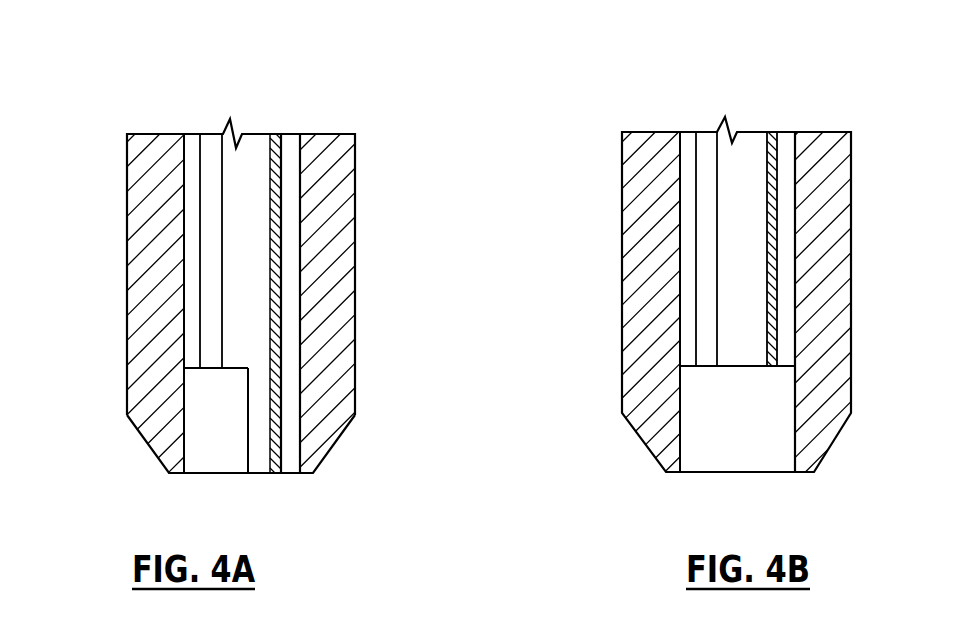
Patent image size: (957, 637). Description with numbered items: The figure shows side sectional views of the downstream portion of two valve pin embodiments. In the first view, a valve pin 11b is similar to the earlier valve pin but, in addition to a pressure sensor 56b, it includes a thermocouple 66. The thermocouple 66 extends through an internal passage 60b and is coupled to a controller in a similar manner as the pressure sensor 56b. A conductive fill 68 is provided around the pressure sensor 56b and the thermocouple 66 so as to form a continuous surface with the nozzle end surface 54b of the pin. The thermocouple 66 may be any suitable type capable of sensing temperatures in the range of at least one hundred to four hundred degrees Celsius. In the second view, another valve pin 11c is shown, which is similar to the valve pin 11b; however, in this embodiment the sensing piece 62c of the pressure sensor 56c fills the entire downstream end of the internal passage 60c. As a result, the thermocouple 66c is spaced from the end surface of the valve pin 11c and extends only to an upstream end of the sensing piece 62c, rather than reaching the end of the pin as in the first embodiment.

In FIG. 4A, the valve pin 11b is at (100, 232).
In FIG. 4A, the nozzle end surface 54b is at (313, 473).
In FIG. 4A, the pressure sensor 56b is at (197, 391).
In FIG. 4A, the internal passage 60b is at (302, 251).
In FIG. 4A, the thermocouple 66 is at (285, 362).
In FIG. 4A, the conductive fill 68 is at (260, 405).
In FIG. 4B, the valve pin 11c is at (595, 230).
In FIG. 4B, the internal passage 60c is at (748, 152).
In FIG. 4B, the pressure sensor 56c is at (711, 405).
In FIG. 4B, the sensing piece 62c is at (767, 421).
In FIG. 4B, the thermocouple 66c is at (777, 303).